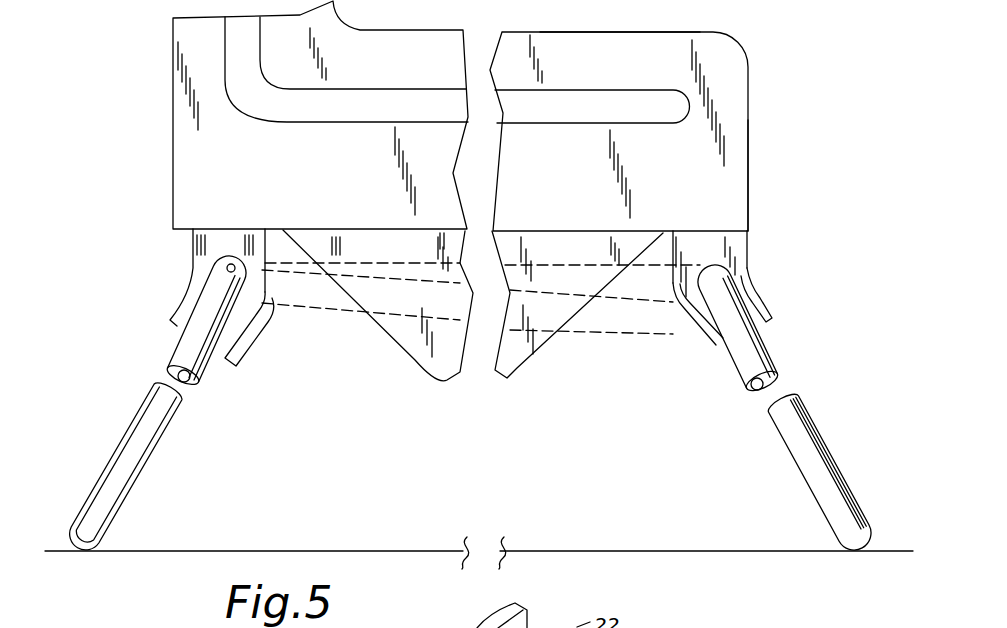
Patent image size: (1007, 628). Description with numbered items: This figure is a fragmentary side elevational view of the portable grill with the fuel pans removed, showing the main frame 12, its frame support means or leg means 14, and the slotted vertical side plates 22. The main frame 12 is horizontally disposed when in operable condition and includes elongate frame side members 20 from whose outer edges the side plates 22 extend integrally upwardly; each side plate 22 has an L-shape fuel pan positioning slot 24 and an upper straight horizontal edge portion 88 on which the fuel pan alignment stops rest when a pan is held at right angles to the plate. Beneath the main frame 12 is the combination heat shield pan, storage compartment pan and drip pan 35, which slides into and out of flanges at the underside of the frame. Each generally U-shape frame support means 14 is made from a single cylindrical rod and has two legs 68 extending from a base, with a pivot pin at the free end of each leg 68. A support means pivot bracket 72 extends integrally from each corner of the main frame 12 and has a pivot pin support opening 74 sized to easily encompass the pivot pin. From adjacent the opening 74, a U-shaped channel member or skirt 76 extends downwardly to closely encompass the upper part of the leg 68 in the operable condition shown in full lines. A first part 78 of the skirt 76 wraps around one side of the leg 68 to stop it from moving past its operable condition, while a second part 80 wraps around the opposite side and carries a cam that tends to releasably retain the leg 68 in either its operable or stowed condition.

The main frame 12 is at (170, 234).
The frame support means or leg means 14 is at (162, 466).
The frame side member 20 is at (737, 182).
The slotted vertical side plate 22 is at (727, 66).
The L-shape fuel pan positioning slot 24 is at (366, 96).
The combination heat shield pan, storage compartment pan and drip pan 35 is at (509, 379).
The leg 68 is at (150, 407).
The support means pivot bracket 72 is at (195, 248).
The pivot pin support opening 74 is at (234, 265).
The U-shaped channel member or skirt 76 is at (222, 353).
The first part of the skirt 78 is at (760, 298).
The second part of the skirt 80 is at (232, 340).
The upper straight horizontal edge portion 88 is at (548, 32).